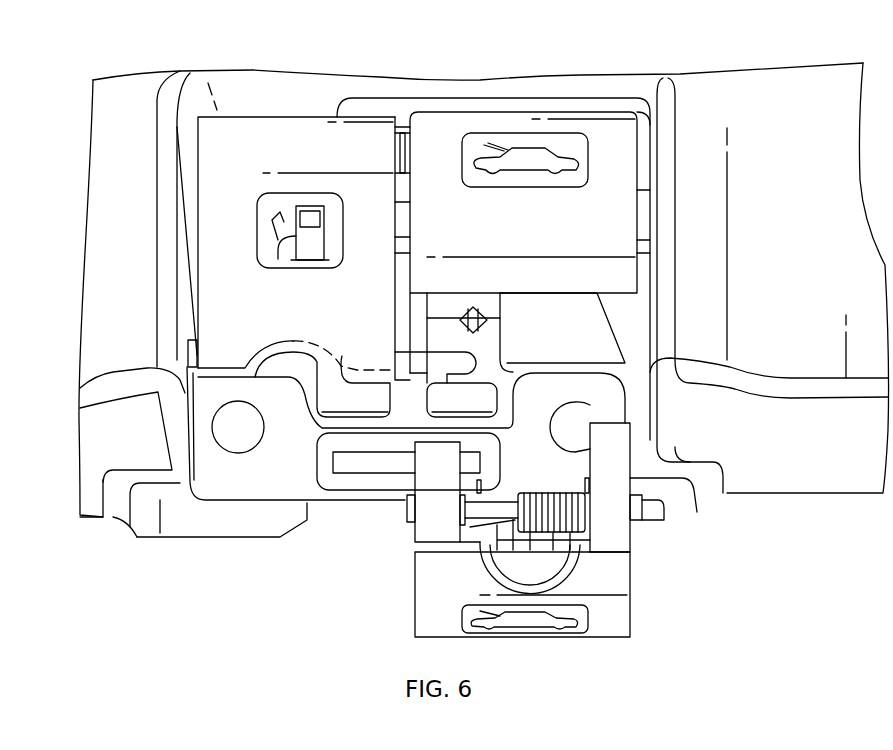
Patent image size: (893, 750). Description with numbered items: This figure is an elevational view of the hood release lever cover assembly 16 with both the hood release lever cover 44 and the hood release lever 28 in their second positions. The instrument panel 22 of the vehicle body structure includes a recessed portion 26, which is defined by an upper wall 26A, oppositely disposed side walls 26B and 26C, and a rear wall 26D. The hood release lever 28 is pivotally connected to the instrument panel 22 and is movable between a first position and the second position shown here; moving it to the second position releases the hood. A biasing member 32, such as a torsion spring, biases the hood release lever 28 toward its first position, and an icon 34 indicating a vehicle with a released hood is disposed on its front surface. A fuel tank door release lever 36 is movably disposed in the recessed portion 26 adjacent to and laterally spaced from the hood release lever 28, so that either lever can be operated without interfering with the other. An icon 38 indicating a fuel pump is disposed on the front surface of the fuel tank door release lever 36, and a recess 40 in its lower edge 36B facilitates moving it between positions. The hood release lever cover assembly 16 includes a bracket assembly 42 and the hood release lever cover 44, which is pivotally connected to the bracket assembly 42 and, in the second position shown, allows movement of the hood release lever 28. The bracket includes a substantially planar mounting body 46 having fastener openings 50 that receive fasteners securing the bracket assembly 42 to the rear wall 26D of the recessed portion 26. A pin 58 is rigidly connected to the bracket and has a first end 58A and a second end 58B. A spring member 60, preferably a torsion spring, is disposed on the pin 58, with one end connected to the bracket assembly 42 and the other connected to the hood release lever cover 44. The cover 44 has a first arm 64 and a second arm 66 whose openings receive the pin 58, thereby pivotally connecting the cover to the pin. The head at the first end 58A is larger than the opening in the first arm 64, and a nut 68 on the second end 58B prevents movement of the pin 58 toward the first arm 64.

The hood release lever cover assembly 16 is at (332, 503).
The instrument panel 22 is at (800, 105).
The recessed portion 26 is at (180, 98).
The upper wall 26A is at (300, 92).
The side wall 26B is at (170, 223).
The side wall 26C is at (657, 272).
The rear wall 26D is at (625, 318).
The hood release lever 28 is at (575, 117).
The biasing member 32 is at (405, 160).
The icon 34 is at (532, 187).
The fuel tank door release lever 36 is at (258, 115).
The lower edge 36B is at (213, 377).
The icon 38 is at (293, 268).
The recess 40 is at (290, 355).
The bracket assembly 42 is at (254, 503).
The hood release lever cover 44 is at (630, 583).
The mounting body 46 is at (221, 480).
The fastener opening 50 is at (233, 435).
The pin 58 is at (502, 498).
The first end 58A is at (418, 522).
The second end 58B is at (645, 510).
The spring member 60 is at (570, 515).
The first arm 64 is at (432, 503).
The second arm 66 is at (613, 533).
The nut 68 is at (645, 487).